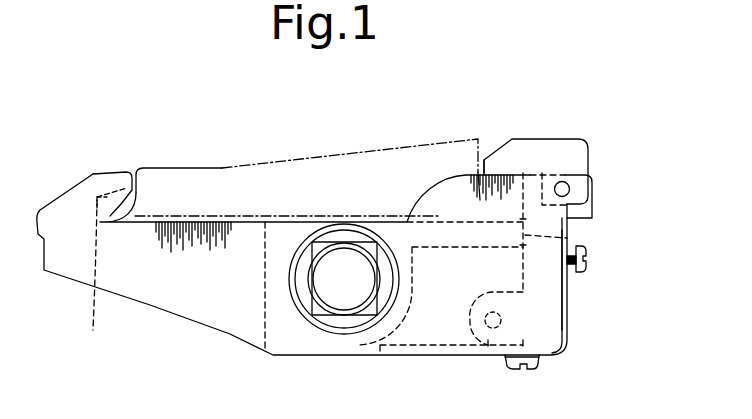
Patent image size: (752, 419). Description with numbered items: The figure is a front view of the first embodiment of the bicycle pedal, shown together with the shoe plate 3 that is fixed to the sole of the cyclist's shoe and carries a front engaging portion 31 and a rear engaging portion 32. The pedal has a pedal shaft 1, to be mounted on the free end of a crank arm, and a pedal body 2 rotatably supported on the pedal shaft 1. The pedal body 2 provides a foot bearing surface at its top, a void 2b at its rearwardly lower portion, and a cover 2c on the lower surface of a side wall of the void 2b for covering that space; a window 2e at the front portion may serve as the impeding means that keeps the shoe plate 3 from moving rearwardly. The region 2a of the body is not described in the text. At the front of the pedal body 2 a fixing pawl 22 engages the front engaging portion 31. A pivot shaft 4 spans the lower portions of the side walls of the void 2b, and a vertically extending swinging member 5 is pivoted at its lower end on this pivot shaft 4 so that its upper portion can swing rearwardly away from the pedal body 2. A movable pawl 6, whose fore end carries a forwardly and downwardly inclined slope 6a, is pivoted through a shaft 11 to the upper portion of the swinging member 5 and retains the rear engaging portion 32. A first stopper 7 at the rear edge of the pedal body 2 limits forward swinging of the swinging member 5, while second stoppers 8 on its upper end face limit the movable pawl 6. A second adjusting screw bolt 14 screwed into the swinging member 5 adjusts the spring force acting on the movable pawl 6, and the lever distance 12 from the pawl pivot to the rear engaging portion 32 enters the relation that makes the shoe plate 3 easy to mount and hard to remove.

The pedal shaft 1 is at (340, 298).
The pedal body 2 is at (382, 217).
The body upper block 2a is at (181, 225).
The void 2b is at (450, 325).
The cover 2c is at (430, 345).
The window 2e is at (91, 279).
The shoe plate 3 is at (296, 168).
The pivot shaft 4 is at (490, 348).
The swinging member 5 is at (567, 290).
The movable pawl 6 is at (578, 137).
The slope 6a is at (493, 167).
The first stopper 7 is at (567, 238).
The second stoppers 8 is at (530, 174).
The shaft 11 is at (571, 189).
The distance 12 is at (530, 368).
The second adjusting screw bolt 14 is at (586, 270).
The fixing pawl 22 is at (120, 175).
The front engaging portion 31 is at (98, 195).
The rear engaging portion 32 is at (480, 200).